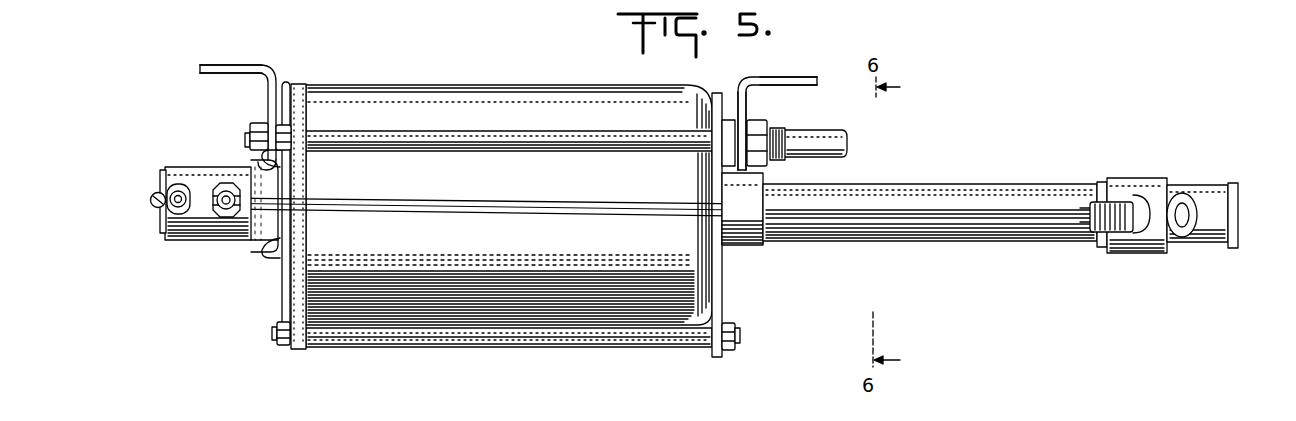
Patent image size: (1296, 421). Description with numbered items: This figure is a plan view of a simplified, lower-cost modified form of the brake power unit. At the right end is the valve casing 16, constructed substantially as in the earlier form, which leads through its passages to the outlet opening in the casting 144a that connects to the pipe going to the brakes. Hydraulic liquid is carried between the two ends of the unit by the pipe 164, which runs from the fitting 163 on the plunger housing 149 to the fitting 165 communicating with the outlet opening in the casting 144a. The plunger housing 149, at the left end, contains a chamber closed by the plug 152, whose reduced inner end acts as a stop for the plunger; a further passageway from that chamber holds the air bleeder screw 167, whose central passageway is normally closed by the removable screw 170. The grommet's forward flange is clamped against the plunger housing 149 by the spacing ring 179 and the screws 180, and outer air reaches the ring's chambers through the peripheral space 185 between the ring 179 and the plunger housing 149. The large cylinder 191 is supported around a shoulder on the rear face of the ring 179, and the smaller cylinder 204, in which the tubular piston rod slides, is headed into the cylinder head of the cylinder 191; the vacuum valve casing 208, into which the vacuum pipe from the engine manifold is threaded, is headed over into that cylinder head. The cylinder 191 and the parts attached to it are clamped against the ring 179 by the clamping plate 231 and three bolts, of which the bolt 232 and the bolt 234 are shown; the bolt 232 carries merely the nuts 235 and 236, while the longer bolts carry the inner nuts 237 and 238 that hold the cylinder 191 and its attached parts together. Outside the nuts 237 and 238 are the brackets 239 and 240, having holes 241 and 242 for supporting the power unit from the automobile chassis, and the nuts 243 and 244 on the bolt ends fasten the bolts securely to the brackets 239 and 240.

The valve casing 16 is at (1235, 192).
The casting 144a is at (1140, 253).
The plunger housing 149 is at (188, 230).
The plug 152 is at (160, 177).
The fitting 163 is at (220, 184).
The pipe 164 is at (553, 208).
The fitting 165 is at (1115, 200).
The air bleeder screw 167 is at (173, 185).
The removable screw 170 is at (153, 198).
The spacing ring 179 is at (295, 252).
The screws 180 is at (265, 253).
The peripheral space 185 is at (291, 82).
The cylinder 191 is at (420, 102).
The cylinder 204 is at (930, 195).
The vacuum valve casing 208 is at (760, 120).
The clamping plate 231 is at (715, 310).
The bolt 232 is at (515, 333).
The bolt 234 is at (483, 140).
The nut 235 is at (725, 350).
The nut 236 is at (283, 342).
The inner nut 237 is at (732, 138).
The inner nut 238 is at (283, 130).
The bracket 239 is at (740, 103).
The bracket 240 is at (272, 97).
The hole 241 is at (787, 78).
The hole 242 is at (228, 65).
The nut 243 is at (757, 158).
The nut 244 is at (257, 130).